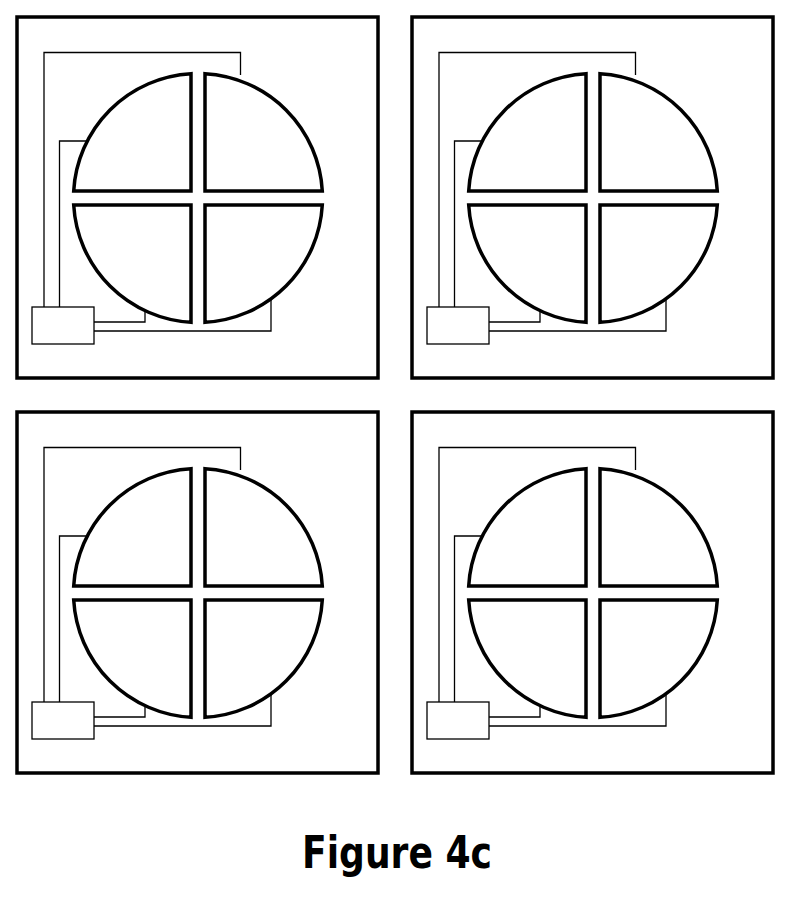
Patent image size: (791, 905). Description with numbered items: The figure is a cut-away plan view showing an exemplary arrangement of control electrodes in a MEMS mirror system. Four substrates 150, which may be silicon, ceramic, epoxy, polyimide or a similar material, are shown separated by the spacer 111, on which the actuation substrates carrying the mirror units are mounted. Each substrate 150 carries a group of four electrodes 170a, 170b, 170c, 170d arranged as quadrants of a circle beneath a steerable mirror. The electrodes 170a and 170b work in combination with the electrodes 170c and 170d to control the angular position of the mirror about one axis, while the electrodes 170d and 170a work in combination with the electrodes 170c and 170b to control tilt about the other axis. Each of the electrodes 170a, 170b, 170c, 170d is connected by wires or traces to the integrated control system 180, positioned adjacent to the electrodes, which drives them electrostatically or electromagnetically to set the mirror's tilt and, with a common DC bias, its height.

The electrode 170a is at (461, 330).
The electrode 170b is at (461, 461).
The electrode 170c is at (330, 461).
The electrode 170d is at (330, 330).
The integrated control system 180 is at (349, 396).
The substrate 150 is at (395, 395).
The spacer 111 is at (395, 395).